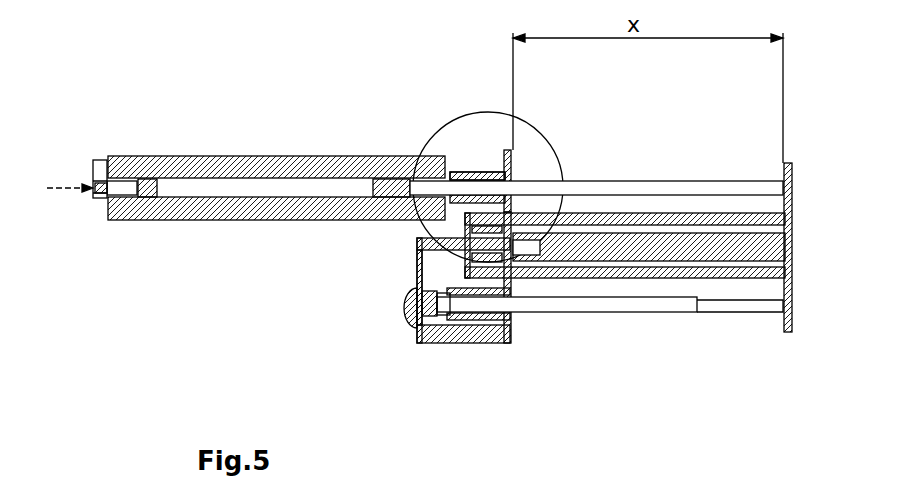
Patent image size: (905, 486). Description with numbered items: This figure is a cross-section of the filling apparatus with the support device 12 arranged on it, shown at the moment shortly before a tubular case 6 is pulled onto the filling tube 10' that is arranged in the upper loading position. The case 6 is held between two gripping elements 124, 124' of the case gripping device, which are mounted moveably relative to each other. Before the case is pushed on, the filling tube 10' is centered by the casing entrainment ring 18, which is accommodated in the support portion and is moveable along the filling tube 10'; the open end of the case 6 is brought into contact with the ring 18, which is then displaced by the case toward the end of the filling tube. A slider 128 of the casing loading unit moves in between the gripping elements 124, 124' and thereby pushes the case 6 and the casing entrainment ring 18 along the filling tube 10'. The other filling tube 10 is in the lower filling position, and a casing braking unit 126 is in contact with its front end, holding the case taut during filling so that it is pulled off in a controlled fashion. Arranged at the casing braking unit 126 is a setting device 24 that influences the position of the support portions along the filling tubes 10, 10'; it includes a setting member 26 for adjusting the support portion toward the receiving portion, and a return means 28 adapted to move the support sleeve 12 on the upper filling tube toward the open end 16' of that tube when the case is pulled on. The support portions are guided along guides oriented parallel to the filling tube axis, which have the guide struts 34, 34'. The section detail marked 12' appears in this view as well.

The tubular case 6 is at (215, 180).
The filling tube 10 is at (602, 360).
The filling tube 10' is at (649, 176).
The support device 12 is at (682, 311).
The bushing 12' is at (497, 244).
The open end of the filling tube 16' is at (472, 129).
The casing entrainment ring 18 is at (485, 172).
The setting device 24 is at (417, 263).
The setting member 26 is at (453, 330).
The return means 28 is at (455, 255).
The guide strut 34 is at (625, 339).
The guide strut 34' is at (625, 181).
The gripping element 124 is at (276, 256).
The gripping element 124' is at (276, 121).
The casing braking unit 126 is at (392, 347).
The slider 128 is at (98, 163).